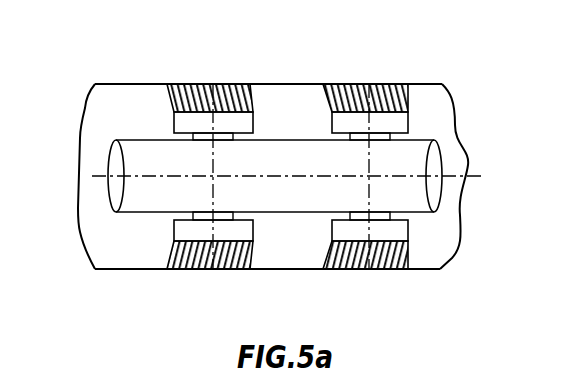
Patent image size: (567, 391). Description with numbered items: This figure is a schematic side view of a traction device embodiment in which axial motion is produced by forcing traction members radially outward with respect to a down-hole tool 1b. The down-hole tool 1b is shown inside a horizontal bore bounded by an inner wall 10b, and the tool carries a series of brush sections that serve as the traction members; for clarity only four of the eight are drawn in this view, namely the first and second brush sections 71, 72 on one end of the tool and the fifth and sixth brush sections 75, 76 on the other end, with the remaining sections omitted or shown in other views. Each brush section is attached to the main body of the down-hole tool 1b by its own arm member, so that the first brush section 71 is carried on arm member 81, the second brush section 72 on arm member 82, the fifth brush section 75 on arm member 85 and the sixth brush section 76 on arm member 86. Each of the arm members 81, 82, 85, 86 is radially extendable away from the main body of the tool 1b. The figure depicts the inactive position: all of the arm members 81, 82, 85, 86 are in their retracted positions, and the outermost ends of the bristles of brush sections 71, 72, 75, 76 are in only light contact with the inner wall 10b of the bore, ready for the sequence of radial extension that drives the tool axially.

The inner wall 10b is at (120, 85).
The down-hole tool 1b is at (453, 143).
The first brush section 71 is at (413, 95).
The second brush section 72 is at (412, 257).
The fifth brush section 75 is at (263, 101).
The sixth brush section 76 is at (260, 255).
The arm member 81 is at (388, 139).
The arm member 82 is at (387, 214).
The arm member 85 is at (232, 134).
The arm member 86 is at (210, 216).